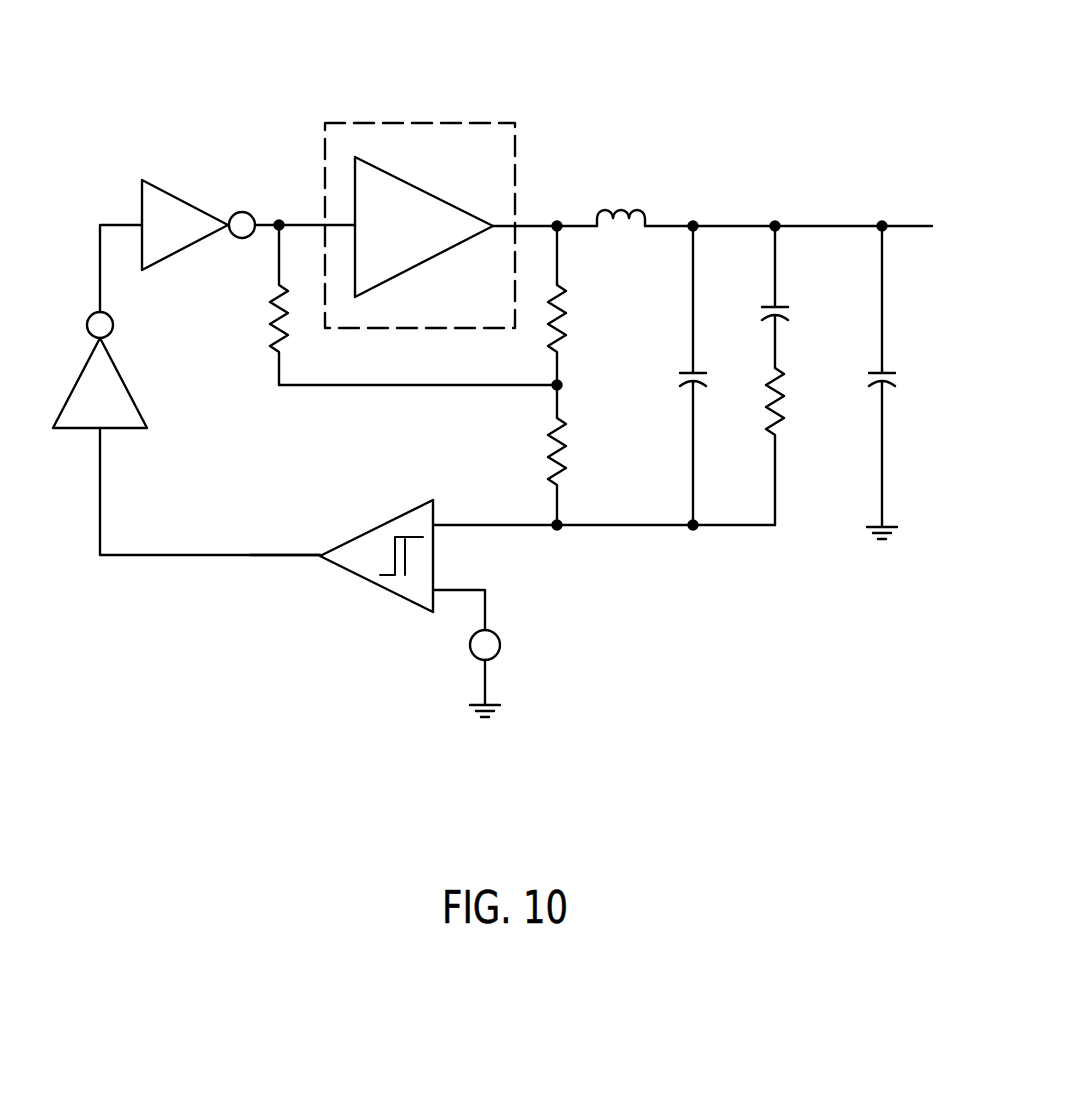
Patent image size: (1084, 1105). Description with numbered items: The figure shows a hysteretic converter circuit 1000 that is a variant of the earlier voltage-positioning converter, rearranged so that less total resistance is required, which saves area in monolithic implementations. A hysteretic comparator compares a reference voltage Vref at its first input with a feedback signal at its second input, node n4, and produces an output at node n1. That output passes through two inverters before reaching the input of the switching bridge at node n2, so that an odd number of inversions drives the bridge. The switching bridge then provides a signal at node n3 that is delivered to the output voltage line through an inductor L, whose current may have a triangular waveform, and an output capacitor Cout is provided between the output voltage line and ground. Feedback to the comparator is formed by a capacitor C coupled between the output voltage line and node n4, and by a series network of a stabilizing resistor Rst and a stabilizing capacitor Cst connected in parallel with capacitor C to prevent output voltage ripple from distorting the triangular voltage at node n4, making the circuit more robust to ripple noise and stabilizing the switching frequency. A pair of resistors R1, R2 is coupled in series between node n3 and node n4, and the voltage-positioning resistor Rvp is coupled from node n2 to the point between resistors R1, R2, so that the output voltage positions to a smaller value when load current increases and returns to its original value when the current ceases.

The hysteretic converter circuit 1000 is at (635, 74).
The inductor L is at (621, 206).
The capacitor C is at (683, 375).
The resistor R1 is at (575, 305).
The resistor R2 is at (575, 455).
The resistor Rvp is at (260, 305).
The capacitor Cst is at (797, 297).
The resistor Rst is at (800, 445).
The output capacitor Cout is at (908, 382).
The reference voltage Vref is at (508, 673).
The node n1 is at (285, 542).
The node n2 is at (280, 211).
The node n3 is at (558, 212).
The node n4 is at (522, 510).